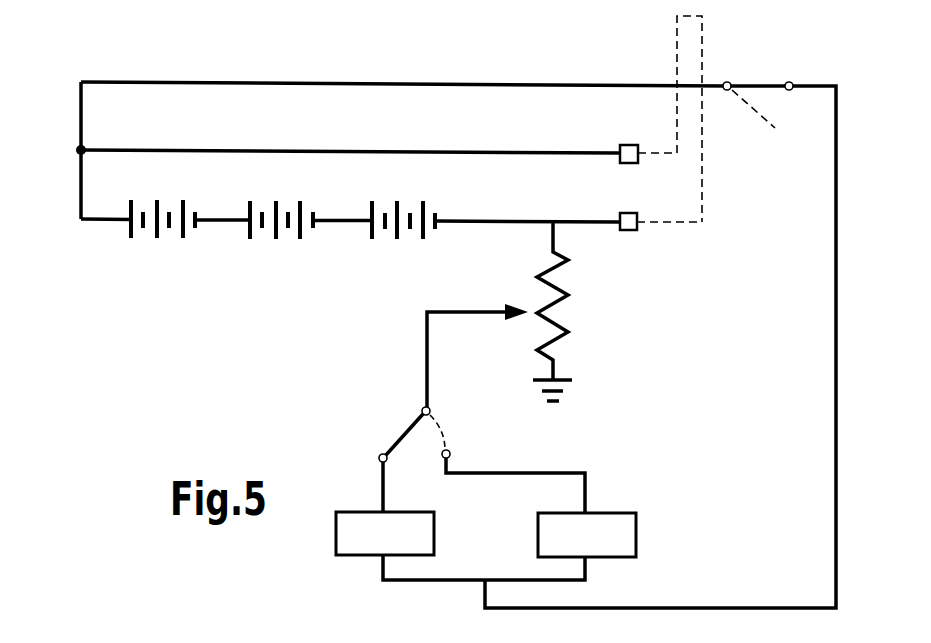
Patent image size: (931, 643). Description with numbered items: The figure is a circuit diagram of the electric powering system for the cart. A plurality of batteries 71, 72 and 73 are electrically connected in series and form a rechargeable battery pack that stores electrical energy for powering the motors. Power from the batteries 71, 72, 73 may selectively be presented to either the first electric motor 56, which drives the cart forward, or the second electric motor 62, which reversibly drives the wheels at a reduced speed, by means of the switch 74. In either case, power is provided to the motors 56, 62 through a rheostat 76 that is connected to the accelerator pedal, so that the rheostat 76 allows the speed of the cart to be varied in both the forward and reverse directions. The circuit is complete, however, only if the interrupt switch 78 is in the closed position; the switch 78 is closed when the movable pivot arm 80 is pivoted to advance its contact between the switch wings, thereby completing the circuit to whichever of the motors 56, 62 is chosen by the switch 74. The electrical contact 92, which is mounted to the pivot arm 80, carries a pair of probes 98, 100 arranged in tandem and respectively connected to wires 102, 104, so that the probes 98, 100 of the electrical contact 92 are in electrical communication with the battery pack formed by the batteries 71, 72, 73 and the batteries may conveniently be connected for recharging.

The first electric motor 56 is at (352, 557).
The second electric motor 62 is at (612, 558).
The battery 71 is at (163, 238).
The battery 72 is at (280, 240).
The battery 73 is at (392, 238).
The switch 74 is at (406, 437).
The rheostat 76 is at (603, 310).
The interrupt switch 78 is at (784, 74).
The pivot arm 80 is at (703, 43).
The electrical contact 92 is at (668, 236).
The probe 98 is at (622, 146).
The probe 100 is at (620, 216).
The wire 102 is at (539, 151).
The wire 104 is at (578, 225).